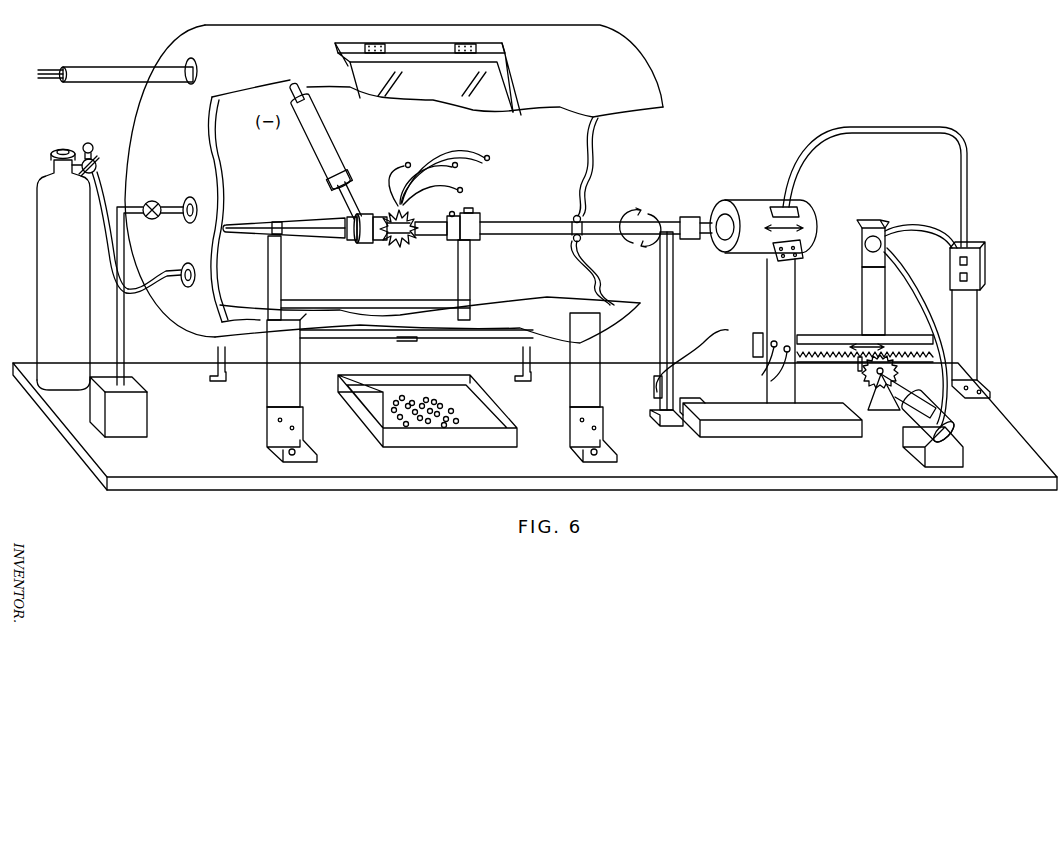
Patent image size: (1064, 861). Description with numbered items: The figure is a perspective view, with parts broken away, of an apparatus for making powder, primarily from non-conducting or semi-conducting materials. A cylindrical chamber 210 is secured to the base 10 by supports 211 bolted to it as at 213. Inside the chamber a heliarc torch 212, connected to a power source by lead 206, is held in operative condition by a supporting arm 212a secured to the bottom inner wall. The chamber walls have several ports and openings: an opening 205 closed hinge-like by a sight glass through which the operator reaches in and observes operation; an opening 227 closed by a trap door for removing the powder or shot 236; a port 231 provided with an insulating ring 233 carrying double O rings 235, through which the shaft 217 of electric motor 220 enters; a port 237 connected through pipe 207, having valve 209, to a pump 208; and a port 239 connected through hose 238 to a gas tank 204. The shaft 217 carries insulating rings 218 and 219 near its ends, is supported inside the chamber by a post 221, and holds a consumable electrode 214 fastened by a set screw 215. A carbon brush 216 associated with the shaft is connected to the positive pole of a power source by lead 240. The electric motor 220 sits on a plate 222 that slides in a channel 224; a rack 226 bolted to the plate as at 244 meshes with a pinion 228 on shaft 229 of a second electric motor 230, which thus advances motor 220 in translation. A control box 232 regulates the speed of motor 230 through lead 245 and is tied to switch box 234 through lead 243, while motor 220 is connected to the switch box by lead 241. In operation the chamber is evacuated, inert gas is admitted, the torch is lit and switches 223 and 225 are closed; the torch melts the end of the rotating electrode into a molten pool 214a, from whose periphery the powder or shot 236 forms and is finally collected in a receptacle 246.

The base 10 is at (650, 469).
The gas tank 204 is at (47, 264).
The opening 205 is at (417, 87).
The lead 206 is at (113, 67).
The pipe 207 is at (126, 358).
The pump 208 is at (112, 423).
The valve 209 is at (164, 201).
The cylindrical chamber 210 is at (273, 57).
The supports 211 is at (272, 374).
The heliarc torch 212 is at (357, 248).
The supporting arm 212a is at (282, 295).
The bolts 213 is at (283, 456).
The consumable electrode 214 is at (436, 240).
The molten pool 214a is at (418, 250).
The set screw 215 is at (455, 213).
The carbon brush 216 is at (659, 280).
The shaft 217 is at (504, 243).
The insulating ring 218 is at (692, 216).
The insulating ring 219 is at (473, 218).
The electric motor 220 is at (742, 249).
The post 221 is at (450, 296).
The plate 222 is at (766, 306).
The switch 223 is at (980, 262).
The channel 224 is at (815, 437).
The switch 225 is at (968, 277).
The rack 226 is at (837, 335).
The opening 227 is at (390, 340).
The pinion 228 is at (864, 375).
The shaft 229 is at (904, 405).
The electric motor 230 is at (958, 435).
The port 231 is at (575, 215).
The control box 232 is at (860, 220).
The insulating ring 233 is at (574, 245).
The switch box 234 is at (980, 290).
The O rings 235 is at (584, 212).
The powder or shot 236 is at (500, 165).
The port 237 is at (196, 222).
The hose 238 is at (147, 298).
The port 239 is at (205, 282).
The lead 240 is at (728, 330).
The lead 241 is at (908, 127).
The lead 243 is at (942, 232).
The bolts 244 is at (765, 376).
The lead 245 is at (920, 335).
The receptacle 246 is at (366, 425).